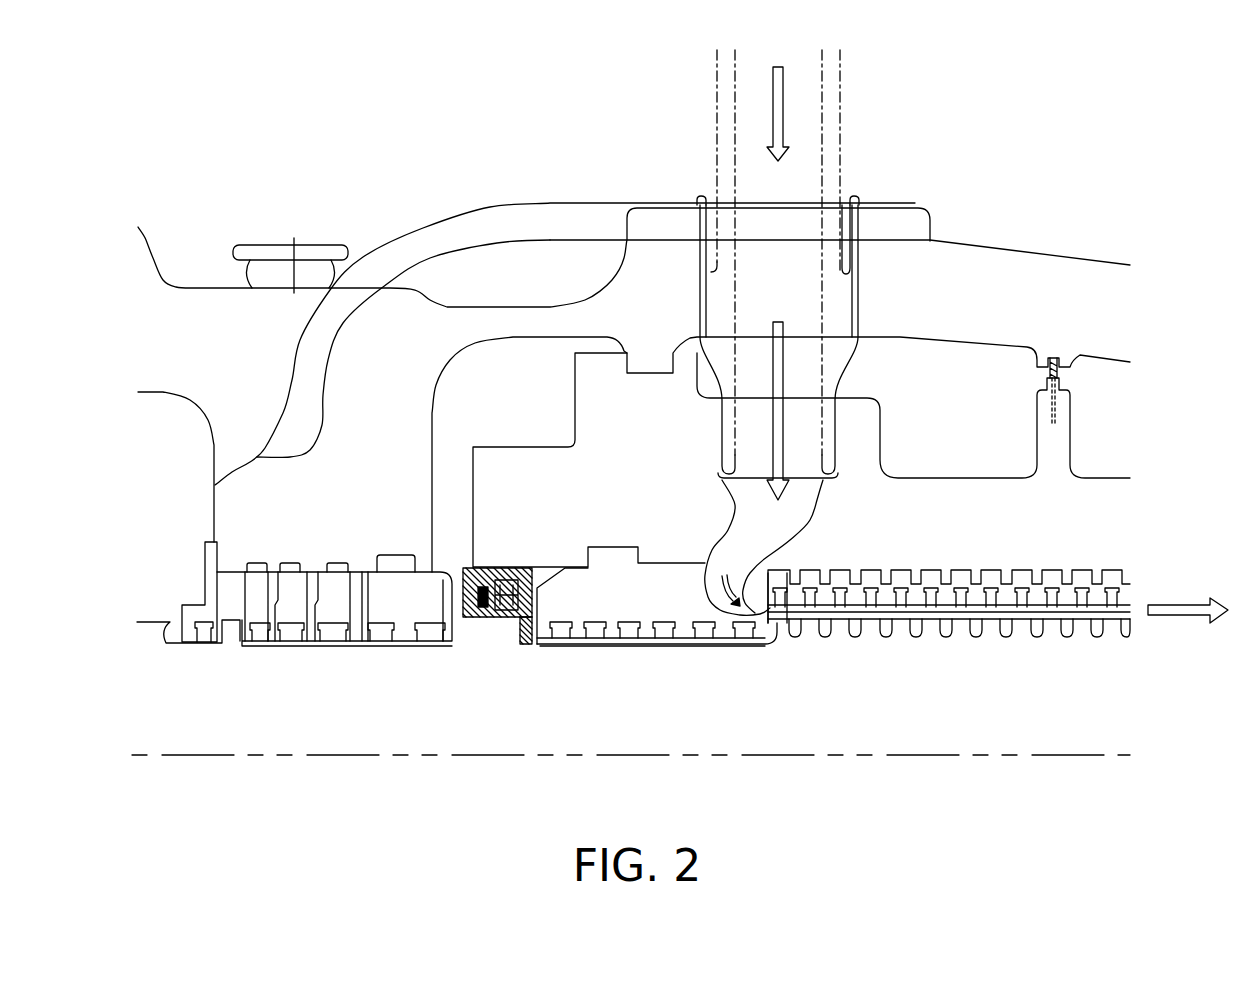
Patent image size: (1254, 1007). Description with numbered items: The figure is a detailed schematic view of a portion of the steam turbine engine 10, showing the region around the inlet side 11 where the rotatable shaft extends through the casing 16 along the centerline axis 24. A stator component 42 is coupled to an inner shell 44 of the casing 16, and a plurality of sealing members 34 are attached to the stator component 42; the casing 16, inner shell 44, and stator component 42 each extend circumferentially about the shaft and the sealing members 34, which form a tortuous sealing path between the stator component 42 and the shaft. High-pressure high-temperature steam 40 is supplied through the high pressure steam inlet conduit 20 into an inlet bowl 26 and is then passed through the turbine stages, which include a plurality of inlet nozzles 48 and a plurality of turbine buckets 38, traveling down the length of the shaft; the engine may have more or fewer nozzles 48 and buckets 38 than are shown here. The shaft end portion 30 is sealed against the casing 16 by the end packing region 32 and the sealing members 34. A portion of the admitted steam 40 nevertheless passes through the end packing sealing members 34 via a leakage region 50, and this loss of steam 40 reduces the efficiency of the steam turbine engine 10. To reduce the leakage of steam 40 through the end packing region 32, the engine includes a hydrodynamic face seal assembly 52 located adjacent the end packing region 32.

The steam turbine engine 10 is at (1083, 112).
The inlet side 11 is at (722, 646).
The casing 16 is at (1037, 252).
The high pressure steam inlet conduit 20 is at (847, 197).
The centerline axis 24 is at (758, 756).
The inlet bowl 26 is at (770, 522).
The shaft end portion 30 is at (157, 622).
The end packing region 32 is at (317, 652).
The sealing members 34 is at (660, 652).
The turbine buckets 38 is at (795, 638).
The steam 40 is at (783, 70).
The stator component 42 is at (634, 602).
The inner shell 44 is at (634, 484).
The inlet nozzles 48 is at (828, 583).
The leakage region 50 is at (540, 645).
The hydrodynamic face seal assembly 52 is at (496, 622).